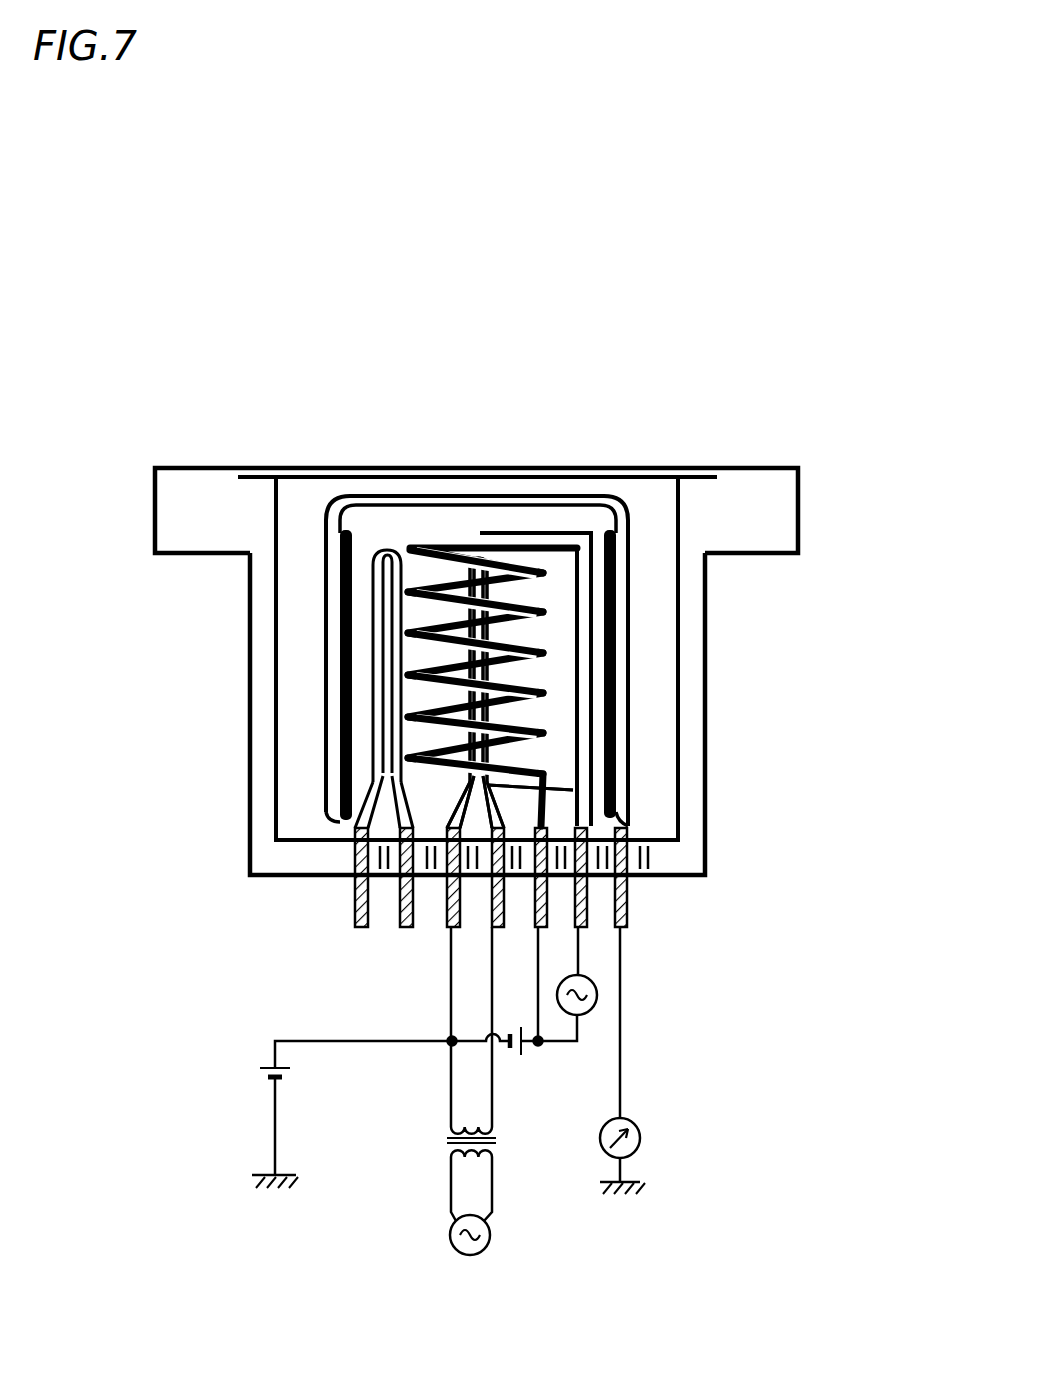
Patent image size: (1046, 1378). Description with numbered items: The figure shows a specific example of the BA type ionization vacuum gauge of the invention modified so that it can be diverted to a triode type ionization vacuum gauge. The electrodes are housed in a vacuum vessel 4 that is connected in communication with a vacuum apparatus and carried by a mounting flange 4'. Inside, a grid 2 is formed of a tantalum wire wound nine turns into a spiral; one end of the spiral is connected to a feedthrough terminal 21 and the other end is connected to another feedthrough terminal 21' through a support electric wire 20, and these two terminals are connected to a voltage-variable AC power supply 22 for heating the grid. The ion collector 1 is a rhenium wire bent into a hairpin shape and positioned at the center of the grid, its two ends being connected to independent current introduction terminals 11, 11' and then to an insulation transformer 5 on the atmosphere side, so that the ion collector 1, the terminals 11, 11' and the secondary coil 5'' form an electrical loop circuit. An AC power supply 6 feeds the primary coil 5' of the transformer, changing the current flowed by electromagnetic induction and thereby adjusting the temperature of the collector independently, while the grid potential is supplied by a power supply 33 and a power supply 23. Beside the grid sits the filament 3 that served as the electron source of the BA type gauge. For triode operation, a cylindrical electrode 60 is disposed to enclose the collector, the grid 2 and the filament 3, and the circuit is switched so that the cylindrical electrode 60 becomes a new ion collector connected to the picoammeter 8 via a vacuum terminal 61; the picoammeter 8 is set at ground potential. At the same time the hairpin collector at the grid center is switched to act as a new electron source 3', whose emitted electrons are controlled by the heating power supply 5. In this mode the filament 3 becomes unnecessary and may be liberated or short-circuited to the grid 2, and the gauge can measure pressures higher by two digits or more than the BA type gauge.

The grid 2 is at (446, 547).
The cylindrical electrode 60 is at (535, 503).
The mounting flange 4' is at (503, 489).
The vacuum vessel 4 is at (535, 676).
The electron source 3' is at (598, 693).
The ion collector 1 is at (628, 693).
The filament 3 is at (296, 738).
The support electric wire 20 is at (582, 692).
The vacuum terminal 61 is at (627, 885).
The feedthrough terminal 21 is at (664, 901).
The feedthrough terminal 21' is at (621, 914).
The current introduction terminal 11' is at (437, 912).
The current introduction terminal 11 is at (515, 914).
The AC power supply 22 is at (593, 1015).
The power supply 23 is at (530, 1055).
The power supply 33 is at (243, 1068).
The insulation transformer 5 is at (470, 1081).
The secondary coil 5'' is at (512, 1031).
The primary coil 5' is at (511, 1185).
The AC power supply 6 is at (503, 1245).
The picoammeter 8 is at (650, 1133).